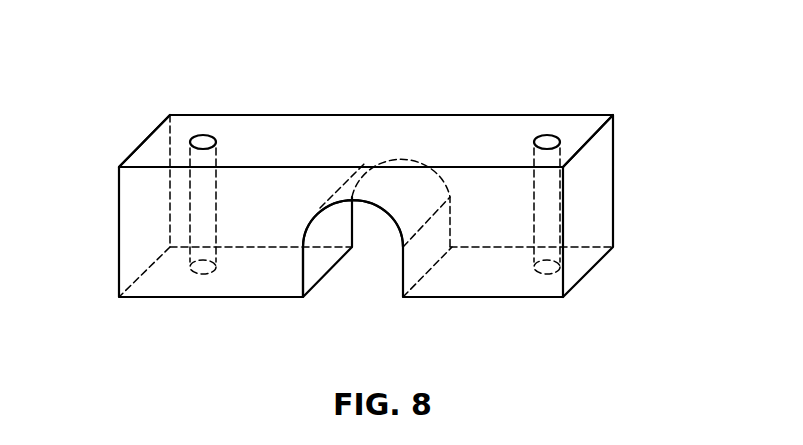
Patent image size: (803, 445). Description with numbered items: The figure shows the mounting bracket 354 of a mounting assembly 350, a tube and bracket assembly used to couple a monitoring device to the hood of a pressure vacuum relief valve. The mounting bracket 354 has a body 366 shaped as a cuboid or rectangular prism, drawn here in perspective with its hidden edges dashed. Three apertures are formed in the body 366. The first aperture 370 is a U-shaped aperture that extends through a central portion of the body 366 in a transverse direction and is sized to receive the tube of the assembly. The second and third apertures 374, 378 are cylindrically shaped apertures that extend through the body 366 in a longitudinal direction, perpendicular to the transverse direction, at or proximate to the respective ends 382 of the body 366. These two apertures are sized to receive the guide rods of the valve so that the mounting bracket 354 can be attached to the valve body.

The mounting assembly 350 is at (427, 68).
The mounting bracket 354 is at (376, 201).
The body 366 is at (315, 132).
The first aperture 370 is at (402, 281).
The second aperture 374 is at (202, 135).
The third aperture 378 is at (543, 136).
The ends 382 is at (146, 140).